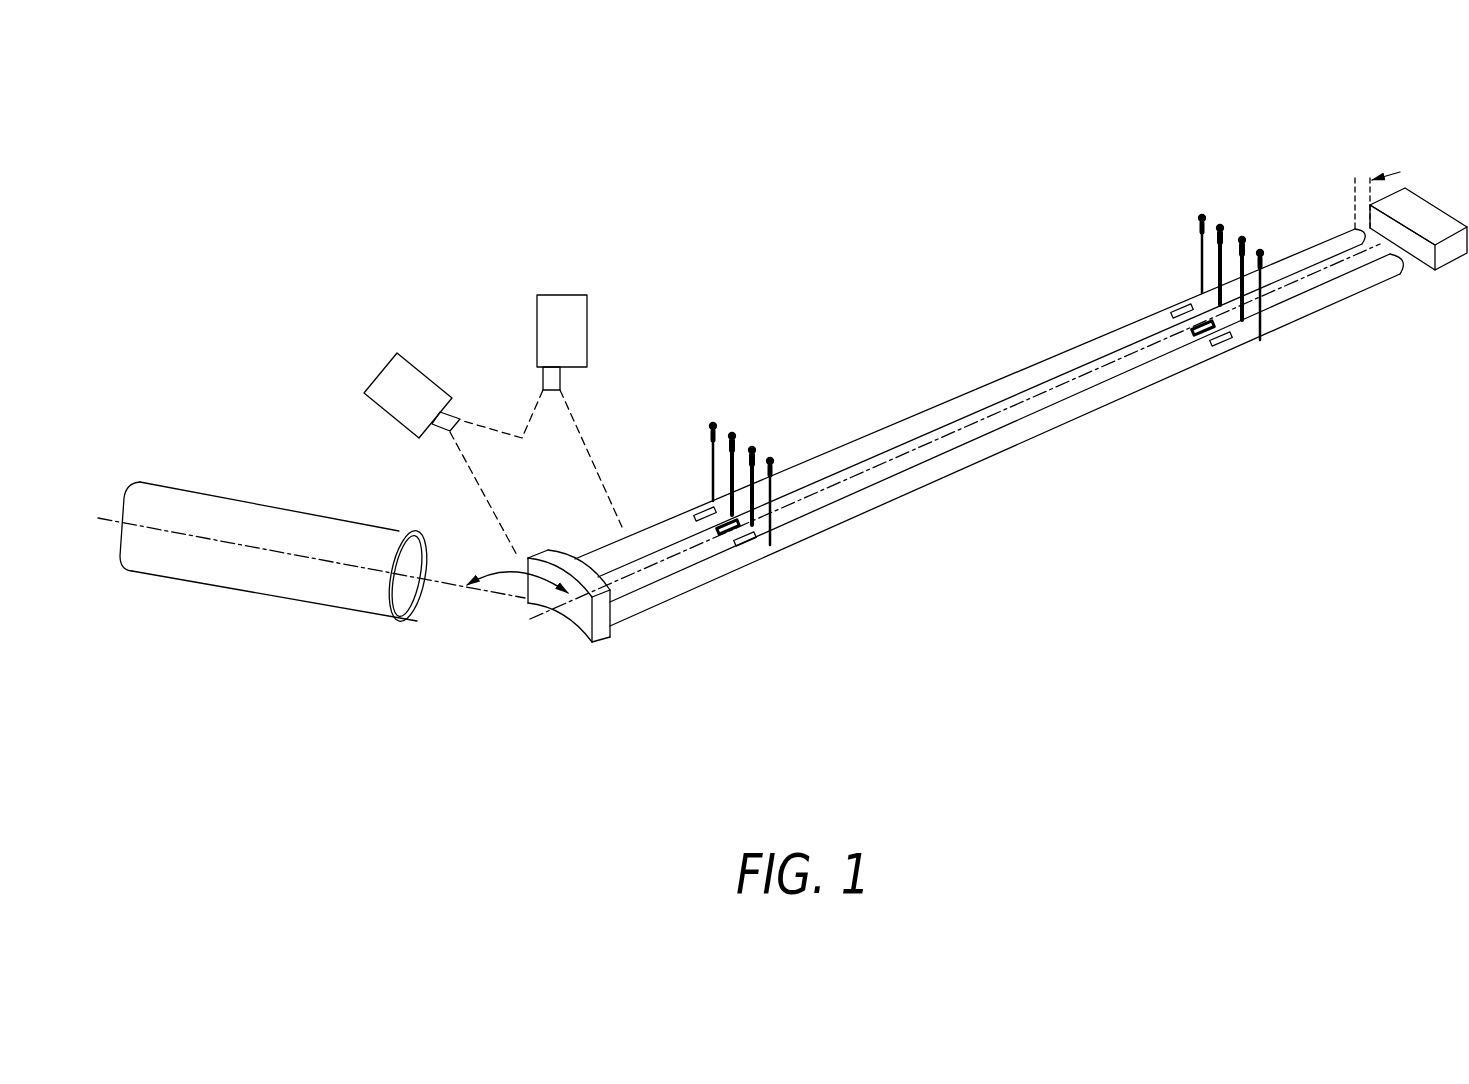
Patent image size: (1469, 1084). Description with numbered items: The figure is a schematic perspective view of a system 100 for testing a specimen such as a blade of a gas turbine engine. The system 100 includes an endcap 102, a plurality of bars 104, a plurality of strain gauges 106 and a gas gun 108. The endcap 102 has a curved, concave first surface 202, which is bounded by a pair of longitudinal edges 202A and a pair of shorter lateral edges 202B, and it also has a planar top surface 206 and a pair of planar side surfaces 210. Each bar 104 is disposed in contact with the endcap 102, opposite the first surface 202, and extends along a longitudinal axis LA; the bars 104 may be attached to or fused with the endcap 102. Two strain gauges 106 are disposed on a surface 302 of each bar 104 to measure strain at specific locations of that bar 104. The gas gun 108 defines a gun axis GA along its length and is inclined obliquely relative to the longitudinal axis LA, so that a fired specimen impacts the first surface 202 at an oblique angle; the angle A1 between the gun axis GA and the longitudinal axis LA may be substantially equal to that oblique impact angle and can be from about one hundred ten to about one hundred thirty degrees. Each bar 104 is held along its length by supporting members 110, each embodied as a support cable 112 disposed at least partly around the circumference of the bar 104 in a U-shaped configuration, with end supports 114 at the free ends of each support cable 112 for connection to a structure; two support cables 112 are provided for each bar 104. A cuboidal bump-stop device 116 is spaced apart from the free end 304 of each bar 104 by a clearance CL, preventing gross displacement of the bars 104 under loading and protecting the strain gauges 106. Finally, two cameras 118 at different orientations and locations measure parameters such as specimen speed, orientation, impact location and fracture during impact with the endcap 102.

The system 100 is at (232, 247).
The endcap 102 is at (932, 439).
The bars 104 is at (989, 382).
The strain gauges 106 is at (697, 520).
The gas gun 108 is at (243, 578).
The supporting members 110 is at (993, 345).
The support cable 112 is at (728, 477).
The end supports 114 is at (712, 422).
The bump-stop device 116 is at (1420, 207).
The camera 118 is at (557, 305).
The first surface 202 is at (570, 595).
The longitudinal edges 202A is at (532, 552).
The lateral edges 202B is at (523, 590).
The top surface 206 is at (563, 568).
The side surfaces 210 is at (605, 608).
The surface 302 is at (1040, 420).
The end 304 is at (1410, 270).
The gun axis GA is at (103, 518).
The longitudinal axis LA is at (1378, 262).
The clearance CL is at (1354, 192).
The angle A1 is at (507, 568).